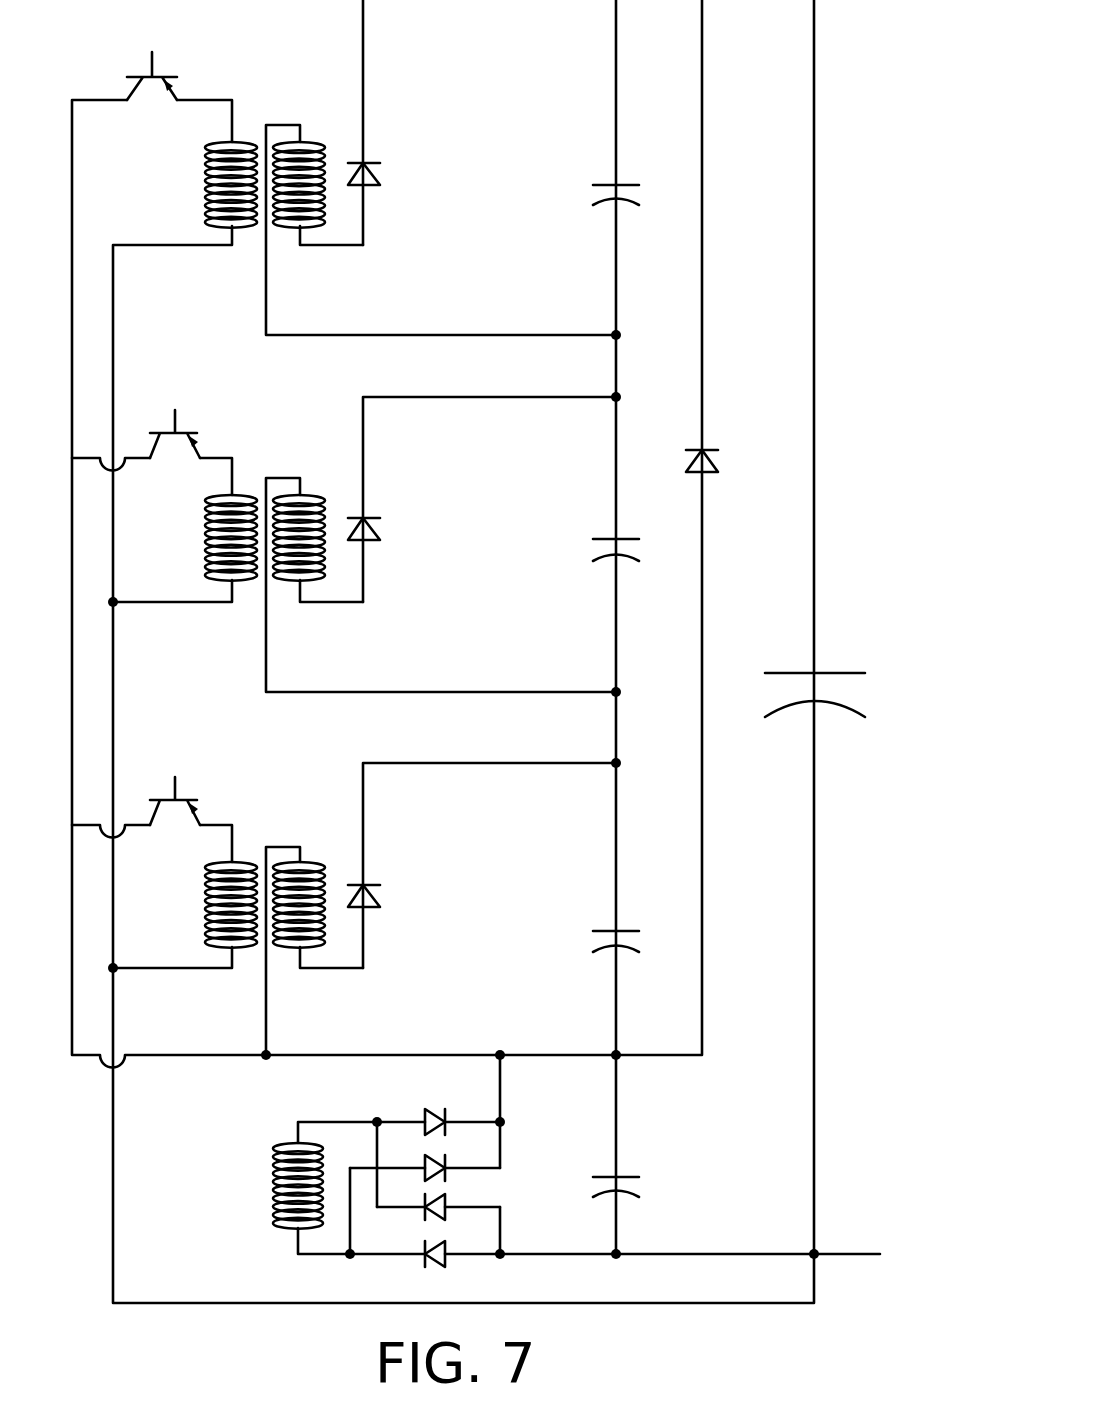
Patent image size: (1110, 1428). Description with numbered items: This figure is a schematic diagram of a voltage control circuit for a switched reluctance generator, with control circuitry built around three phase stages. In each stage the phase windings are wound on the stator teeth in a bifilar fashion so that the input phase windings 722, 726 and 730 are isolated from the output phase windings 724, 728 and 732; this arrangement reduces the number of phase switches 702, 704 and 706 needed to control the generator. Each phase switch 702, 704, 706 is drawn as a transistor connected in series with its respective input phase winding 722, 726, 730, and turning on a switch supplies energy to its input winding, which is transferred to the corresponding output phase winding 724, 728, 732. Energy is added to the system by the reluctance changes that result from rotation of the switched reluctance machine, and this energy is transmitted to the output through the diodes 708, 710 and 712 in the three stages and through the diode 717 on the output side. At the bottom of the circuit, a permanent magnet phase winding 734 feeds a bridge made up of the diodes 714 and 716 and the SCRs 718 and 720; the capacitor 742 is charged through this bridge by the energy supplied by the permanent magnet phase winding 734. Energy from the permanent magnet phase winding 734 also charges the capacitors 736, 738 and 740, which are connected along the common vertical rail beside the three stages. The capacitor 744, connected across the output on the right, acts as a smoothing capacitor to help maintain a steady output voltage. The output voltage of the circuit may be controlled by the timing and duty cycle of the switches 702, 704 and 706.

The phase switch 702 is at (150, 63).
The phase switch 704 is at (176, 422).
The phase switch 706 is at (176, 791).
The diode 708 is at (370, 163).
The diode 710 is at (372, 531).
The diode 712 is at (370, 885).
The diode 714 is at (420, 1259).
The diode 716 is at (435, 1216).
The diode 717 is at (710, 450).
The SCR 718 is at (447, 1176).
The SCR 720 is at (420, 1113).
The input phase winding 722 is at (205, 156).
The output phase winding 724 is at (318, 145).
The input phase winding 726 is at (207, 523).
The output phase winding 728 is at (318, 497).
The input phase winding 730 is at (205, 880).
The output phase winding 732 is at (316, 864).
The permanent magnet phase winding 734 is at (273, 1148).
The capacitor 736 is at (600, 185).
The capacitor 738 is at (605, 539).
The capacitor 740 is at (605, 931).
The capacitor 742 is at (625, 1177).
The smoothing capacitor 744 is at (832, 673).